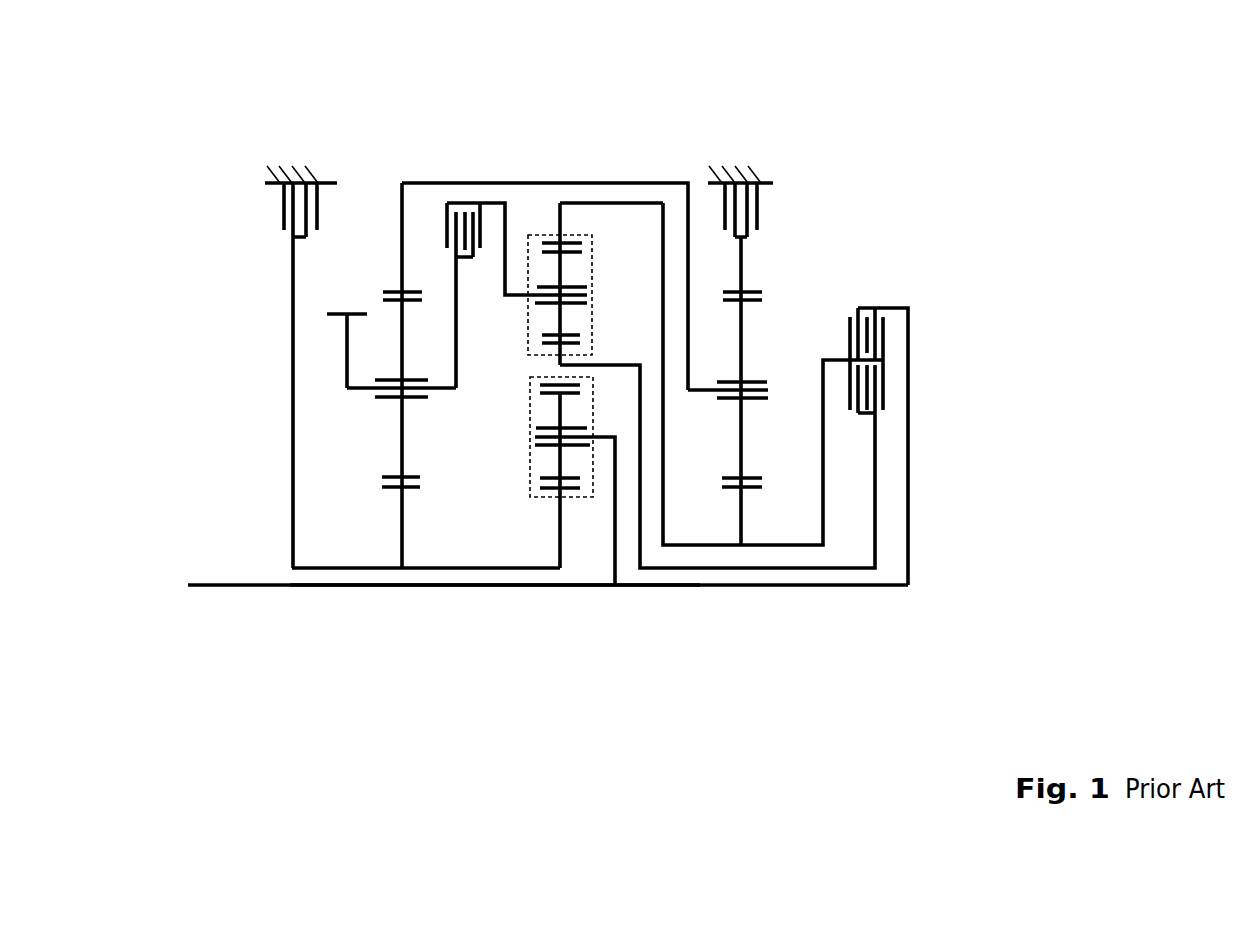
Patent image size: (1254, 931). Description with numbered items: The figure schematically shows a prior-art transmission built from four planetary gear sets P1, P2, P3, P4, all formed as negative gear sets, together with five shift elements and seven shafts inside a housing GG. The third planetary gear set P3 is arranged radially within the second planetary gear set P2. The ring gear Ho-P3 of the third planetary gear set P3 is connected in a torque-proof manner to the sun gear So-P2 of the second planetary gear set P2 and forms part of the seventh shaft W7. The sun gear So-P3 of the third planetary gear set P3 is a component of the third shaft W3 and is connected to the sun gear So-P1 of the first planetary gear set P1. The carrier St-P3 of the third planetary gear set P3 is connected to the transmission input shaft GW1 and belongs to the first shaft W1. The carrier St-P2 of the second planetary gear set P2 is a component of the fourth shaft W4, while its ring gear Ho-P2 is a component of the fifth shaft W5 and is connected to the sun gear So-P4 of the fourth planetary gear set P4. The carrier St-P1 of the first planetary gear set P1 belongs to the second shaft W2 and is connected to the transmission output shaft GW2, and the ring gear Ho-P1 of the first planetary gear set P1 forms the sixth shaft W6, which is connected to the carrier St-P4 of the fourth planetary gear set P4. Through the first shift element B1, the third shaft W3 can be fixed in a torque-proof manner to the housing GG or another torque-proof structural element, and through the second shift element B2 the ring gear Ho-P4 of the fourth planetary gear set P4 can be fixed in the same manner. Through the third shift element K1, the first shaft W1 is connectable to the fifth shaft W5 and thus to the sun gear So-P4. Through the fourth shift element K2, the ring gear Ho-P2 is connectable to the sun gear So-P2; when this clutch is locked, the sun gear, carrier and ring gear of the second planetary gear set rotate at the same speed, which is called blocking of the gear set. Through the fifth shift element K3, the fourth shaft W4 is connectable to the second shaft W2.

The first shift element B1 is at (268, 227).
The second shift element B2 is at (772, 198).
The third shift element K1 is at (893, 333).
The fourth shift element K2 is at (893, 382).
The fifth shift element K3 is at (420, 221).
The housing GG is at (745, 172).
The transmission input shaft GW1 is at (222, 592).
The transmission output shaft GW2 is at (337, 306).
The first shaft W1 is at (306, 592).
The second shaft W2 is at (347, 372).
The third shaft W3 is at (292, 506).
The fourth shaft W4 is at (490, 203).
The fifth shaft W5 is at (824, 479).
The sixth shaft W6 is at (682, 183).
The seventh shaft W7 is at (875, 530).
The first planetary gear set P1 is at (340, 386).
The second planetary gear set P2 is at (550, 386).
The third planetary gear set P3 is at (617, 386).
The fourth planetary gear set P4 is at (874, 477).
The ring gear of the first planetary gear set Ho-P1 is at (387, 290).
The ring gear of the second planetary gear set Ho-P2 is at (568, 240).
The ring gear of the third planetary gear set Ho-P3 is at (582, 385).
The ring gear of the fourth planetary gear set Ho-P4 is at (752, 290).
The sun gear of the first planetary gear set So-P1 is at (390, 490).
The sun gear of the second planetary gear set So-P2 is at (542, 350).
The sun gear of the third planetary gear set So-P3 is at (568, 495).
The sun gear of the fourth planetary gear set So-P4 is at (752, 490).
The carrier of the first planetary gear set St-P1 is at (362, 390).
The carrier of the second planetary gear set St-P2 is at (520, 285).
The carrier of the third planetary gear set St-P3 is at (597, 450).
The carrier of the fourth planetary gear set St-P4 is at (703, 393).